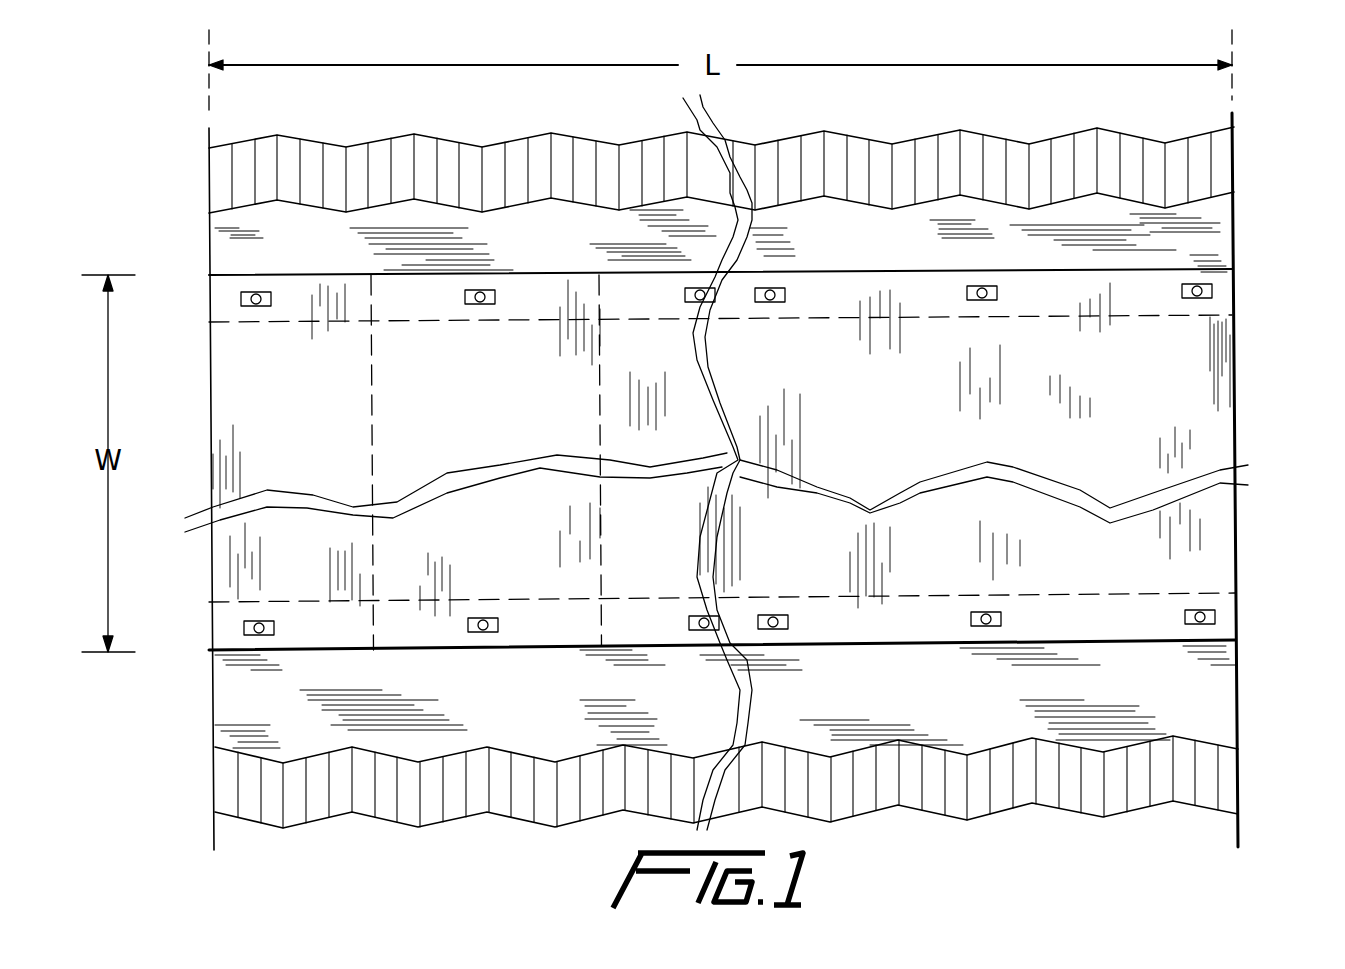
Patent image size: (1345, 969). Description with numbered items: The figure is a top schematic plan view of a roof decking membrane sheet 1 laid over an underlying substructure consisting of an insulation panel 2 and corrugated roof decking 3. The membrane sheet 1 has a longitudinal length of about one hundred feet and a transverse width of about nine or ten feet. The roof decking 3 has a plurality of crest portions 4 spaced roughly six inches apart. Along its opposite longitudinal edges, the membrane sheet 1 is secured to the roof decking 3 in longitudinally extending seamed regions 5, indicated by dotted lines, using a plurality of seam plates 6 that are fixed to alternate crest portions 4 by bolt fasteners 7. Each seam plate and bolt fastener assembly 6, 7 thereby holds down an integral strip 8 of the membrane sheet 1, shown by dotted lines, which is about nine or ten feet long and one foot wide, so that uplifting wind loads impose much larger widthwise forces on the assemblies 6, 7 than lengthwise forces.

The membrane sheet 1 is at (242, 410).
The insulation panel 2 is at (1213, 245).
The roof decking 3 is at (1218, 174).
The crest portions 4 is at (253, 162).
The seamed regions 5 is at (865, 293).
The seam plates 6 is at (270, 306).
The bolt fasteners 7 is at (472, 305).
The integral strip 8 is at (472, 421).